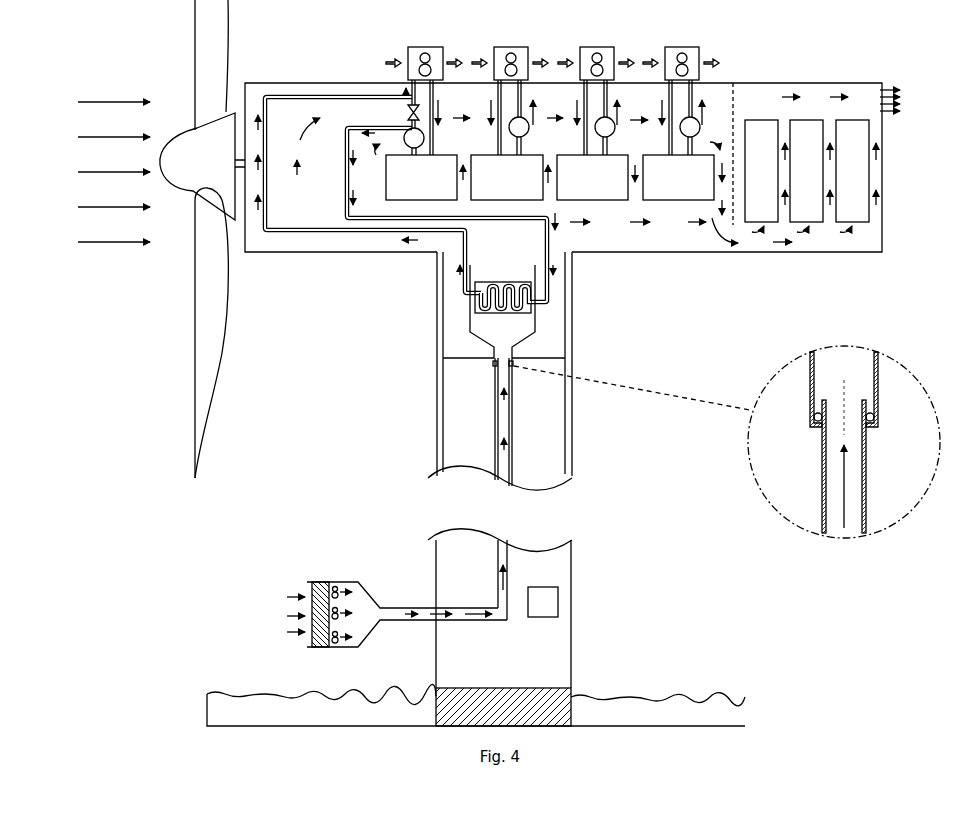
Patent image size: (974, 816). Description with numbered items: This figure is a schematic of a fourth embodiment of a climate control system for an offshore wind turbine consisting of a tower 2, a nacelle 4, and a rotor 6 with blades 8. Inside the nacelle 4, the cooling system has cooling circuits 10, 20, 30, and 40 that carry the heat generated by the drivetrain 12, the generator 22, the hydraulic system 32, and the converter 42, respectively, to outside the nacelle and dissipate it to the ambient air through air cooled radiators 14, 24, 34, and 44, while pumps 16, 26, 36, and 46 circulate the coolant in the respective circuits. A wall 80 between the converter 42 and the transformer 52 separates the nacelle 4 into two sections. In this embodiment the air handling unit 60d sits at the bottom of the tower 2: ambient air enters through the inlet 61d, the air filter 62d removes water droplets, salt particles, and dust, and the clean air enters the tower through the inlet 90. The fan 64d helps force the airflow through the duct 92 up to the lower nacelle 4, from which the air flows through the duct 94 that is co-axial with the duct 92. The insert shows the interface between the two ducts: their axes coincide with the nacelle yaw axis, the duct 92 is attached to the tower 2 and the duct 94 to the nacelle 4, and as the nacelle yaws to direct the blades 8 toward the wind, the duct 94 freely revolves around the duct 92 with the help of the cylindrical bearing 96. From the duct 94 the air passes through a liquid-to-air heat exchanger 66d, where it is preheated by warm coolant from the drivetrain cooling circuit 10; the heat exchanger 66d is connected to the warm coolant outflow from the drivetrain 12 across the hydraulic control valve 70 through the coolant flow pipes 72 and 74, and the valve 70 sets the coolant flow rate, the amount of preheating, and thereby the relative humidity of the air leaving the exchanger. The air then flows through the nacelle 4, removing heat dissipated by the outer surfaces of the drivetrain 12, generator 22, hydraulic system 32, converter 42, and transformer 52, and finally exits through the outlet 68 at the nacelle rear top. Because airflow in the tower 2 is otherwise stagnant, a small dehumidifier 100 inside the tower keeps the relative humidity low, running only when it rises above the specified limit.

The tower 2 is at (570, 610).
The nacelle 4 is at (740, 83).
The rotor 6 is at (190, 155).
The blades 8 is at (207, 335).
The cooling circuit 10 is at (414, 111).
The drivetrain 12 is at (412, 200).
The air cooled radiator 14 is at (408, 52).
The pump 16 is at (432, 148).
The cooling circuit 20 is at (508, 111).
The generator 22 is at (495, 200).
The air cooled radiator 24 is at (494, 52).
The pump 26 is at (526, 123).
The cooling circuit 30 is at (595, 111).
The hydraulic system 32 is at (580, 200).
The air cooled radiator 34 is at (580, 52).
The pump 36 is at (612, 123).
The cooling circuit 40 is at (679, 111).
The converter 42 is at (657, 200).
The air cooled radiator 44 is at (665, 52).
The pump 46 is at (698, 123).
The transformer 52 is at (765, 120).
The air handling unit 60d is at (384, 613).
The inlet 61d is at (279, 614).
The air filter 62d is at (318, 640).
The fan 64d is at (335, 585).
The liquid-to-air heat exchanger 66d is at (489, 288).
The outlet 68 is at (901, 100).
The hydraulic control valve 70 is at (408, 115).
The coolant flow pipe 72 is at (348, 178).
The coolant flow pipe 74 is at (267, 150).
The wall 80 is at (733, 205).
The inlet 90 is at (437, 620).
The duct 92 is at (510, 425).
The duct 94 is at (516, 350).
The cylindrical bearing 96 is at (878, 418).
The dehumidifier 100 is at (545, 620).